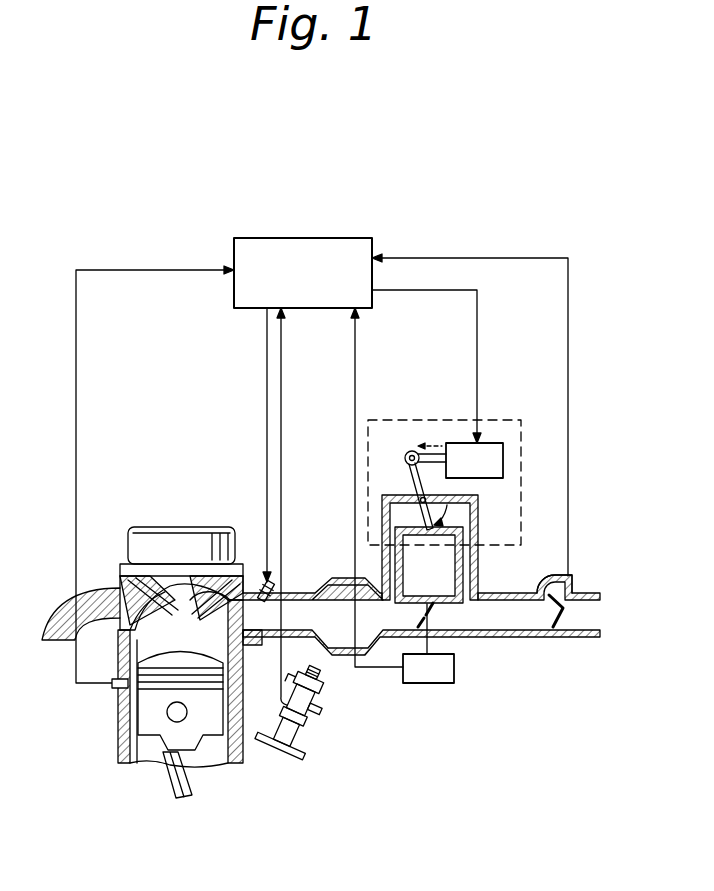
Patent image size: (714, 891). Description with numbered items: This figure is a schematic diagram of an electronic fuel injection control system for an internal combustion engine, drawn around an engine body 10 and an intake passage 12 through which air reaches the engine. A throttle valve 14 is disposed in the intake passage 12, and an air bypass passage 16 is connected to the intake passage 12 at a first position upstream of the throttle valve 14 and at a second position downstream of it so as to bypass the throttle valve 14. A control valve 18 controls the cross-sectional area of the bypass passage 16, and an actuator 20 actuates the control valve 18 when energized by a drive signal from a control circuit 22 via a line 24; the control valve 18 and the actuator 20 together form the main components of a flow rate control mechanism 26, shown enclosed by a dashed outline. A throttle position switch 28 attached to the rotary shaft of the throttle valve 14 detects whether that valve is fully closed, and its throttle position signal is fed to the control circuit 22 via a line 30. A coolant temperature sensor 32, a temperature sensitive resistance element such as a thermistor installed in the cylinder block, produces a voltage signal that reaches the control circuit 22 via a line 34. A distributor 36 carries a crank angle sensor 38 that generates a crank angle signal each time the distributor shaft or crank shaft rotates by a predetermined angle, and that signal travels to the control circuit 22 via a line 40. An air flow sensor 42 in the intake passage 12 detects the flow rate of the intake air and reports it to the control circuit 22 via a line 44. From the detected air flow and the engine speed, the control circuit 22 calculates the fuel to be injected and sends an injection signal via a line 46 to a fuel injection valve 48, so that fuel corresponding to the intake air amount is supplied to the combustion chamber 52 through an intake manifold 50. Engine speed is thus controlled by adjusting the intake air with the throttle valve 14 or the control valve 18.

The engine body 10 is at (195, 527).
The intake passage 12 is at (515, 617).
The throttle valve 14 is at (432, 606).
The air bypass passage 16 is at (470, 560).
The control valve 18 is at (424, 512).
The actuator 20 is at (503, 458).
The control circuit 22 is at (346, 239).
The line 24 is at (479, 352).
The flow rate control mechanism 26 is at (499, 420).
The throttle position switch 28 is at (427, 683).
The line 30 is at (358, 352).
The coolant temperature sensor 32 is at (115, 692).
The line 34 is at (76, 352).
The distributor 36 is at (320, 722).
The crank angle sensor 38 is at (290, 702).
The line 40 is at (283, 352).
The air flow sensor 42 is at (582, 568).
The line 44 is at (570, 352).
The line 46 is at (267, 352).
The fuel injection valve 48 is at (261, 582).
The intake manifold 50 is at (262, 635).
The combustion chamber 52 is at (186, 651).